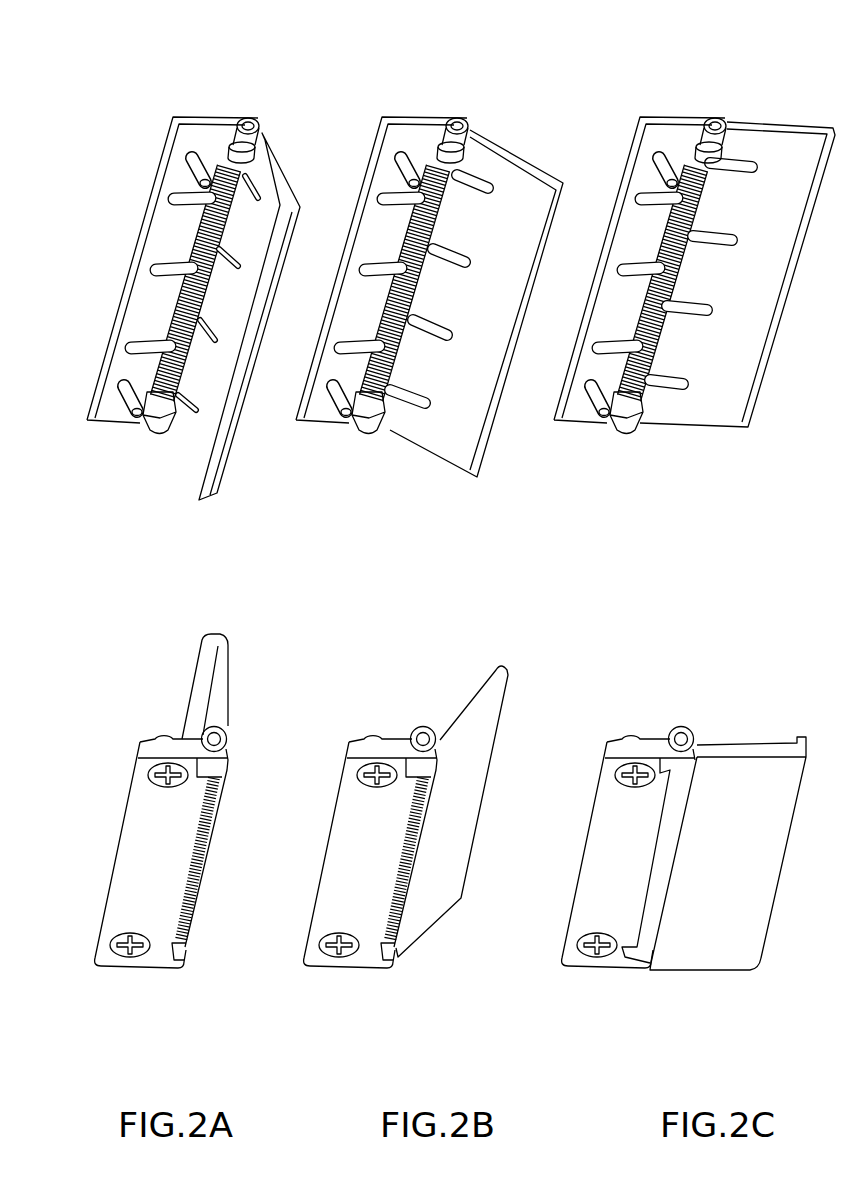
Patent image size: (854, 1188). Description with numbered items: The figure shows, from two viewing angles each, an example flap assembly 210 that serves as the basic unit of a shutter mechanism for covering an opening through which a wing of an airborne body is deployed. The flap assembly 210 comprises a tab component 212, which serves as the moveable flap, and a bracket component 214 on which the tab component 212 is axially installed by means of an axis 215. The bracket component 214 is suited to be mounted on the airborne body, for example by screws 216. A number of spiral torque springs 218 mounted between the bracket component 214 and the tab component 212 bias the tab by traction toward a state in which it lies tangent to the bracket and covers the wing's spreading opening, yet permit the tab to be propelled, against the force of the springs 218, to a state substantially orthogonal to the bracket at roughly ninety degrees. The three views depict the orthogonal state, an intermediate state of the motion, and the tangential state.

In FIG. 2A, the flap assembly 210 is at (165, 100).
In FIG. 2B, the flap assembly 210 is at (427, 470).
In FIG. 2C, the flap assembly 210 is at (684, 208).
In FIG. 2A, the tab component 212 is at (195, 442).
In FIG. 2B, the tab component 212 is at (476, 543).
In FIG. 2C, the tab component 212 is at (737, 546).
In FIG. 2A, the bracket component 214 is at (103, 418).
In FIG. 2B, the bracket component 214 is at (372, 542).
In FIG. 2C, the bracket component 214 is at (637, 542).
In FIG. 2A, the axis 215 is at (248, 122).
In FIG. 2B, the axis 215 is at (453, 105).
In FIG. 2C, the axis 215 is at (709, 105).
In FIG. 2A, the screws 216 is at (123, 957).
In FIG. 2B, the screws 216 is at (357, 818).
In FIG. 2C, the screws 216 is at (616, 814).
In FIG. 2A, the spiral torque springs 218 is at (165, 432).
In FIG. 2B, the spiral torque springs 218 is at (373, 456).
In FIG. 2C, the spiral torque springs 218 is at (652, 426).